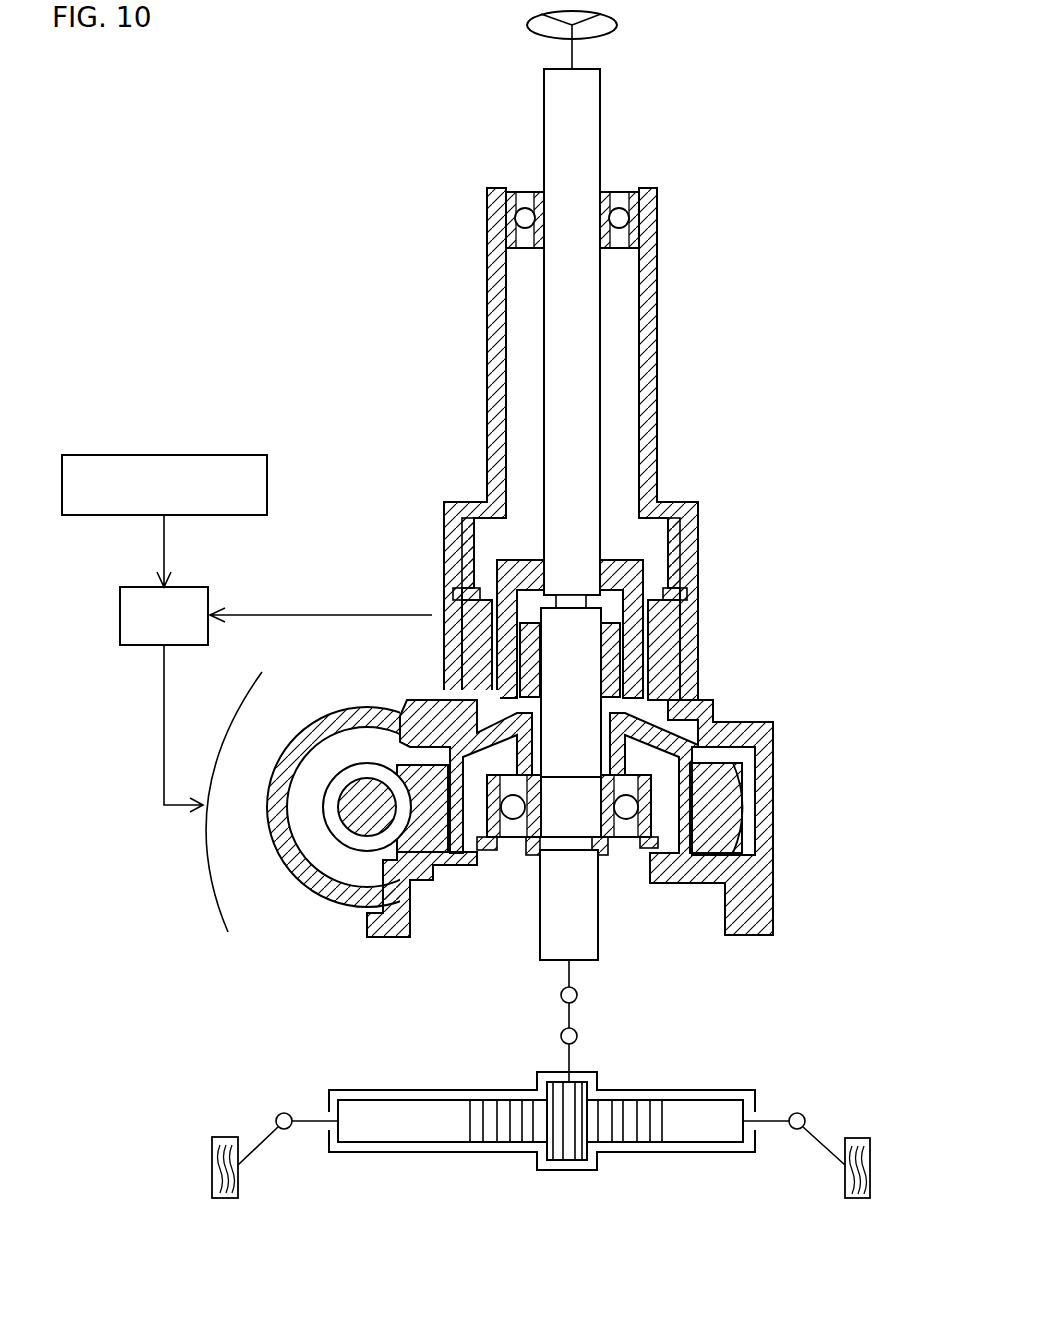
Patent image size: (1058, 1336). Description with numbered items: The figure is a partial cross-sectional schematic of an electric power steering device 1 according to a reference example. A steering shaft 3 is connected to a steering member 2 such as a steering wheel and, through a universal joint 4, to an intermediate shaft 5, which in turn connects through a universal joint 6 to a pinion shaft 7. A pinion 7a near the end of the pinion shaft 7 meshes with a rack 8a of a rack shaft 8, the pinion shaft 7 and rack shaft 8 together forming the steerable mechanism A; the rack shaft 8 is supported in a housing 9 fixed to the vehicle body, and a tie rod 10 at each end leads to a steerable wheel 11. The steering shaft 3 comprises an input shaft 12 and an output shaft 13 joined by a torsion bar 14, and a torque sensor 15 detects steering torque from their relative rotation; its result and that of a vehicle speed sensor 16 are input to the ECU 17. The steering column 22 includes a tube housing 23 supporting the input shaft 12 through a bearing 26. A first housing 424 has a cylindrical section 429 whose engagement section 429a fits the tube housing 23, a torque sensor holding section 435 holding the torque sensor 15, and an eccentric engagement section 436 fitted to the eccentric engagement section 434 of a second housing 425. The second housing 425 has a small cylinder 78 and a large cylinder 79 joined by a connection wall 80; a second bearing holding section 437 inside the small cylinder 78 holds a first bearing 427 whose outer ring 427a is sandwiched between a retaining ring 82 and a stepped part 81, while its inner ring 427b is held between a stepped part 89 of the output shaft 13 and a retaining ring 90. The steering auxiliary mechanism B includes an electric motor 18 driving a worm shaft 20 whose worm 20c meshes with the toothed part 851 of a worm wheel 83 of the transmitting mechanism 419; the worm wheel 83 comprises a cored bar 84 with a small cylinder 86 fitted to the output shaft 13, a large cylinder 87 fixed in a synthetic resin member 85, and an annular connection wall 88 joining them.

The electric power steering device 1 is at (668, 70).
The steering member 2 is at (527, 32).
The steering shaft 3 is at (629, 332).
The universal joint 4 is at (577, 997).
The intermediate shaft 5 is at (565, 1021).
The universal joint 6 is at (577, 1038).
The pinion shaft 7 is at (542, 1135).
The pinion 7a is at (573, 1160).
The rack shaft 8 is at (540, 1160).
The rack 8a is at (518, 1140).
The housing 9 is at (432, 1090).
The tie rod 10 is at (262, 1144).
The steerable wheel 11 is at (226, 1137).
The input shaft 12 is at (588, 297).
The output shaft 13 is at (598, 945).
The torsion bar 14 is at (571, 600).
The torque sensor 15 is at (668, 621).
The vehicle speed sensor 16 is at (200, 455).
The ECU 17 is at (200, 587).
The electric motor 18 is at (332, 800).
The worm shaft 20 is at (323, 879).
The worm 20c is at (333, 827).
The steering column 22 is at (594, 444).
The tube housing 23 is at (660, 347).
The bearing 26 is at (525, 215).
The small cylinder 78 is at (765, 799).
The large cylinder 79 is at (745, 885).
The connection wall 80 is at (690, 870).
The stepped part 81 is at (673, 773).
The retaining ring 82 is at (648, 850).
The worm wheel 83 is at (430, 835).
The cored bar 84 is at (735, 827).
The synthetic resin member 85 is at (425, 878).
The small cylinder 86 is at (528, 742).
The large cylinder 87 is at (363, 764).
The connection wall 88 is at (433, 722).
The stepped part 89 is at (593, 788).
The retaining ring 90 is at (597, 857).
The transmitting mechanism 419 is at (348, 745).
The first housing 424 is at (697, 574).
The second housing 425 is at (787, 934).
The first bearing 427 is at (455, 771).
The outer ring 427a is at (648, 818).
The inner ring 427b is at (505, 773).
The cylindrical section 429 is at (568, 552).
The engagement section 429a is at (480, 542).
The eccentric engagement section 434 is at (745, 912).
The torque sensor holding section 435 is at (665, 657).
The engagement section 436 is at (748, 905).
The second bearing holding section 437 is at (486, 852).
The toothed part 851 is at (733, 823).
The steerable mechanism A is at (541, 1140).
The steering auxiliary mechanism B is at (192, 893).